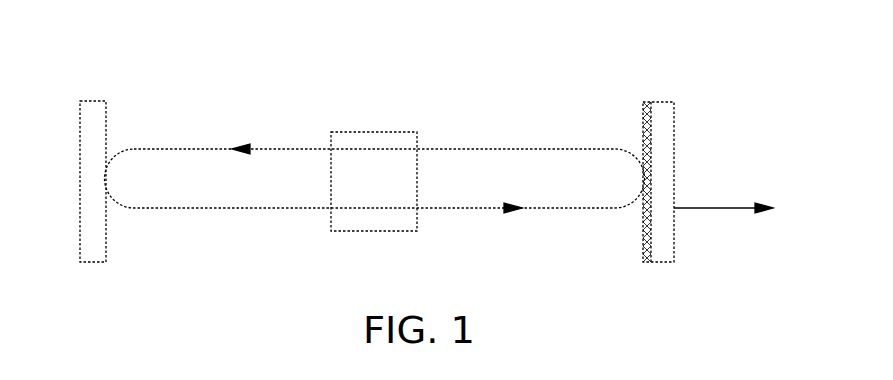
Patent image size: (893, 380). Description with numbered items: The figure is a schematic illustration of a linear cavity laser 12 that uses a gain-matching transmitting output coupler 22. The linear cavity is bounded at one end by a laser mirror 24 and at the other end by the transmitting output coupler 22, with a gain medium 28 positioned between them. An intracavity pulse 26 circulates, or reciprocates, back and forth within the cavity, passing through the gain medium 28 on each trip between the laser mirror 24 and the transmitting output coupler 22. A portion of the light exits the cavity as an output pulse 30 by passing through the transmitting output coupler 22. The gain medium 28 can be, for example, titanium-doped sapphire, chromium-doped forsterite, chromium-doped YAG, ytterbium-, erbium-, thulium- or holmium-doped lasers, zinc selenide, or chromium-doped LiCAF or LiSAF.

The linear cavity laser 12 is at (117, 50).
The transmitting output coupler 22 is at (653, 141).
The laser mirror 24 is at (97, 237).
The intracavity pulse 26 is at (177, 150).
The gain medium 28 is at (372, 162).
The output pulse 30 is at (743, 204).